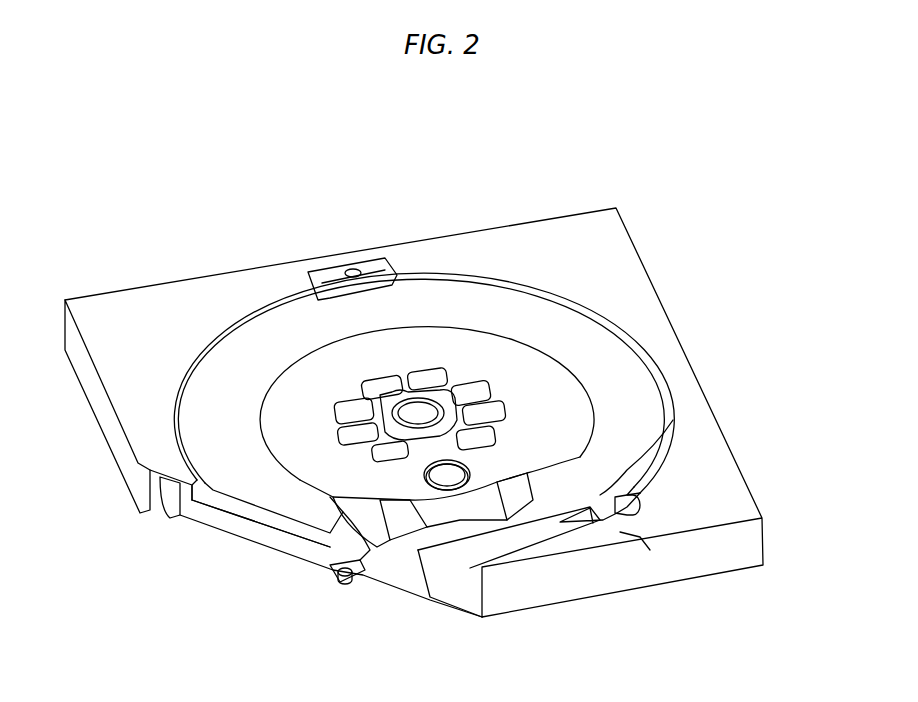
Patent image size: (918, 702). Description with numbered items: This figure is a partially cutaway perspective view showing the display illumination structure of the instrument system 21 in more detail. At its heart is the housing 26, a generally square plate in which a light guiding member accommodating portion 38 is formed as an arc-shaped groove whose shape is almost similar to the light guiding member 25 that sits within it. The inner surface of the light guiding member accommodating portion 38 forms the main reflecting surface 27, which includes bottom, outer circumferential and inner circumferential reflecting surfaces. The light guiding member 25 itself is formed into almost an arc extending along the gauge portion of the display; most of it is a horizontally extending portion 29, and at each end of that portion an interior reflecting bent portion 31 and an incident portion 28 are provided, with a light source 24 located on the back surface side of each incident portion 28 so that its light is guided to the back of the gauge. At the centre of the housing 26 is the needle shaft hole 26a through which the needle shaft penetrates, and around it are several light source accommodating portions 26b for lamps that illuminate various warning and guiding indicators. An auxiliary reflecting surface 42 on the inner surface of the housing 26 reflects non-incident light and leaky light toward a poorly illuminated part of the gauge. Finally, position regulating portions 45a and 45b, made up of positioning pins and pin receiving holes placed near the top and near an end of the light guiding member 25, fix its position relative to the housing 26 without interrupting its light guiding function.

The instrument system 21 is at (683, 218).
The light source 24 is at (338, 575).
The light guiding member 25 is at (453, 268).
The housing 26 is at (660, 288).
The needle shaft hole 26a is at (407, 412).
The light source accommodating portions 26b is at (474, 385).
The main reflecting surface 27 is at (495, 423).
The incident portion 28 is at (337, 572).
The horizontally extending portion 29 is at (643, 422).
The interior reflecting bent portion 31 is at (600, 495).
The light guiding member accommodating portion 38 is at (657, 392).
The auxiliary reflecting surface 42 is at (293, 537).
The position regulating portion 45a is at (372, 260).
The position regulating portion 45b is at (640, 537).